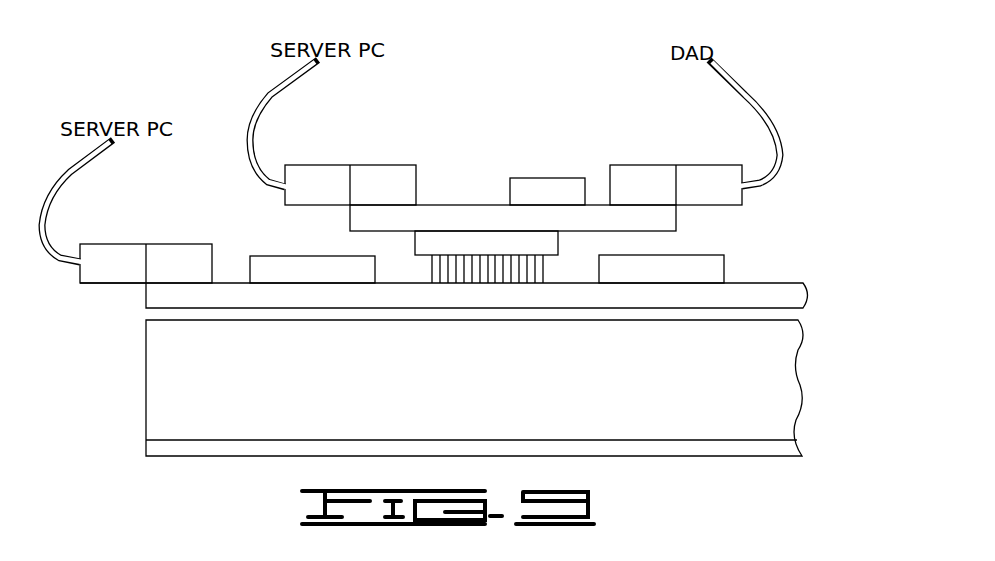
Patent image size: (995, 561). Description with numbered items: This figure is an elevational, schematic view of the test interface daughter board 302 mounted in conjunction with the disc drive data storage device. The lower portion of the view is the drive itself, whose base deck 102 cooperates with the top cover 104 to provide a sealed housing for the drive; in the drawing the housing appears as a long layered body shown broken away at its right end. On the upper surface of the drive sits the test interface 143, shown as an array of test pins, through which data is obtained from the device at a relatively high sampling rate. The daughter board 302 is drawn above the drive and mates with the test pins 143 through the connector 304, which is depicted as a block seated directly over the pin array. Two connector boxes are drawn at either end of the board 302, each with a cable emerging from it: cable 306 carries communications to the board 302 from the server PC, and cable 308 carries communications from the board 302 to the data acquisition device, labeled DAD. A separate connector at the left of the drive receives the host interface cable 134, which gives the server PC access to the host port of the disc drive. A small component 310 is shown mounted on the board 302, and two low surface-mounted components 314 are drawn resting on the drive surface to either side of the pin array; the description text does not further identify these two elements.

The base deck 102 is at (148, 388).
The top cover 104 is at (292, 452).
The host interface cable 134 is at (80, 178).
The test interface 143 is at (547, 273).
The test interface daughter board 302 is at (532, 118).
The connector 304 is at (445, 242).
The cable 306 is at (270, 98).
The cable 308 is at (733, 95).
The component 310 is at (532, 177).
The surface mount components 314 is at (320, 256).